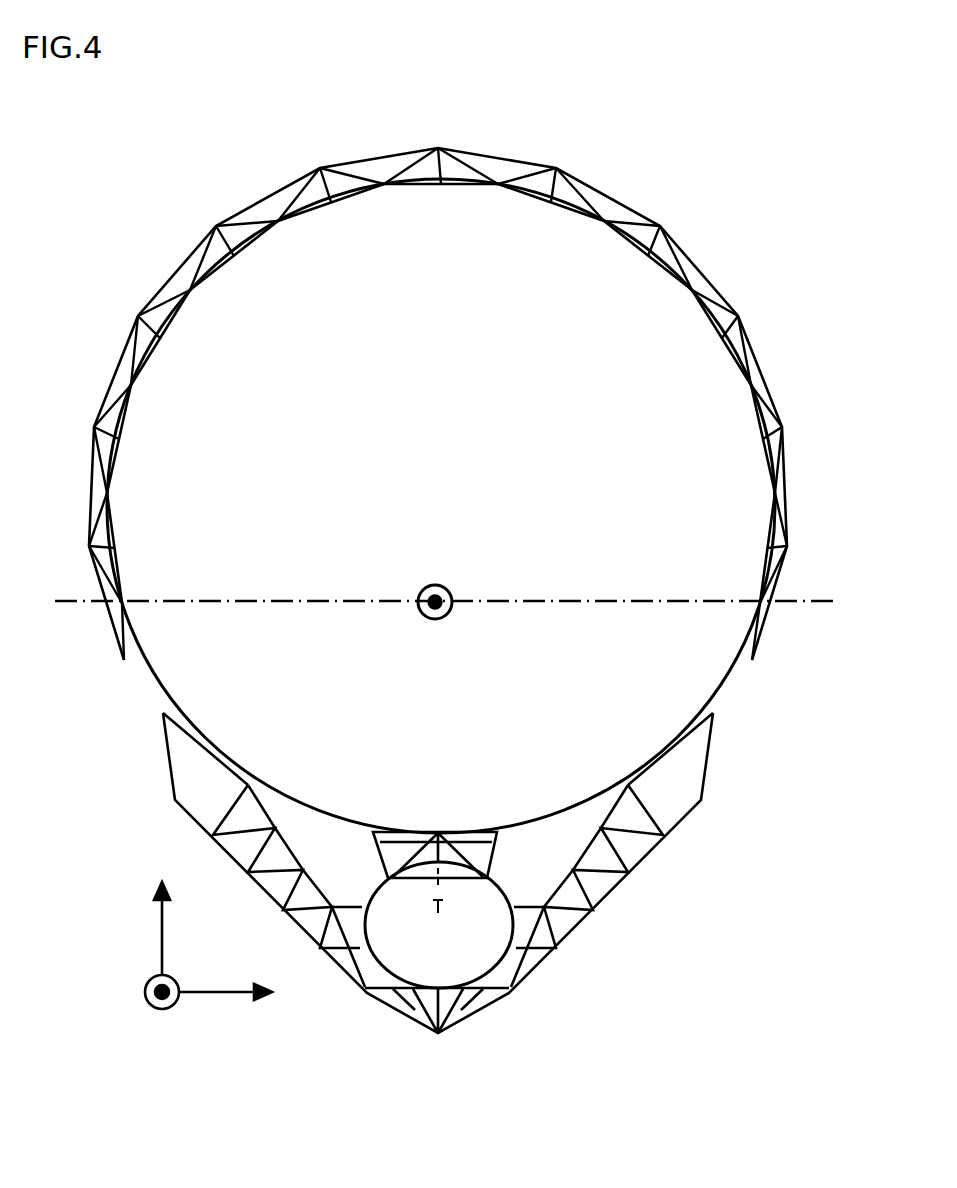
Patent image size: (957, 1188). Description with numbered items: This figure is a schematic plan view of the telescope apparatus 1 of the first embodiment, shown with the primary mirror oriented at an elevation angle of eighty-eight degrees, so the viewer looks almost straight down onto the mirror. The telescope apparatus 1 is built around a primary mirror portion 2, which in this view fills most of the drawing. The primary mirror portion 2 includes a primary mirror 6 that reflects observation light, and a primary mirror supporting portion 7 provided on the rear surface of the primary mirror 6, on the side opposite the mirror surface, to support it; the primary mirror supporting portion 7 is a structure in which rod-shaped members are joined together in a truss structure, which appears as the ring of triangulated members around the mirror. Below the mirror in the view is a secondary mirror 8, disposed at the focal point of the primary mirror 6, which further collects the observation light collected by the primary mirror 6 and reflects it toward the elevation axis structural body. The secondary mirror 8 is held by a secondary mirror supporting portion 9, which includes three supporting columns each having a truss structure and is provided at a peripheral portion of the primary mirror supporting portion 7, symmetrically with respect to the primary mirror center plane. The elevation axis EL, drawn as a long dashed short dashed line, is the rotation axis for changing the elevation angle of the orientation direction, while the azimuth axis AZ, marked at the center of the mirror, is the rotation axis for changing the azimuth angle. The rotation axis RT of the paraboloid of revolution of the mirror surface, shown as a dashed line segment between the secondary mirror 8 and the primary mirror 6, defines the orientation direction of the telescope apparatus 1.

The telescope apparatus 1 is at (247, 190).
The primary mirror portion 2 is at (842, 800).
The primary mirror 6 is at (622, 728).
The primary mirror supporting portion 7 is at (745, 665).
The secondary mirror 8 is at (477, 888).
The secondary mirror supporting portion 9 is at (530, 946).
The azimuth axis AZ is at (446, 617).
The elevation axis EL is at (803, 603).
The rotation axis RT is at (440, 907).